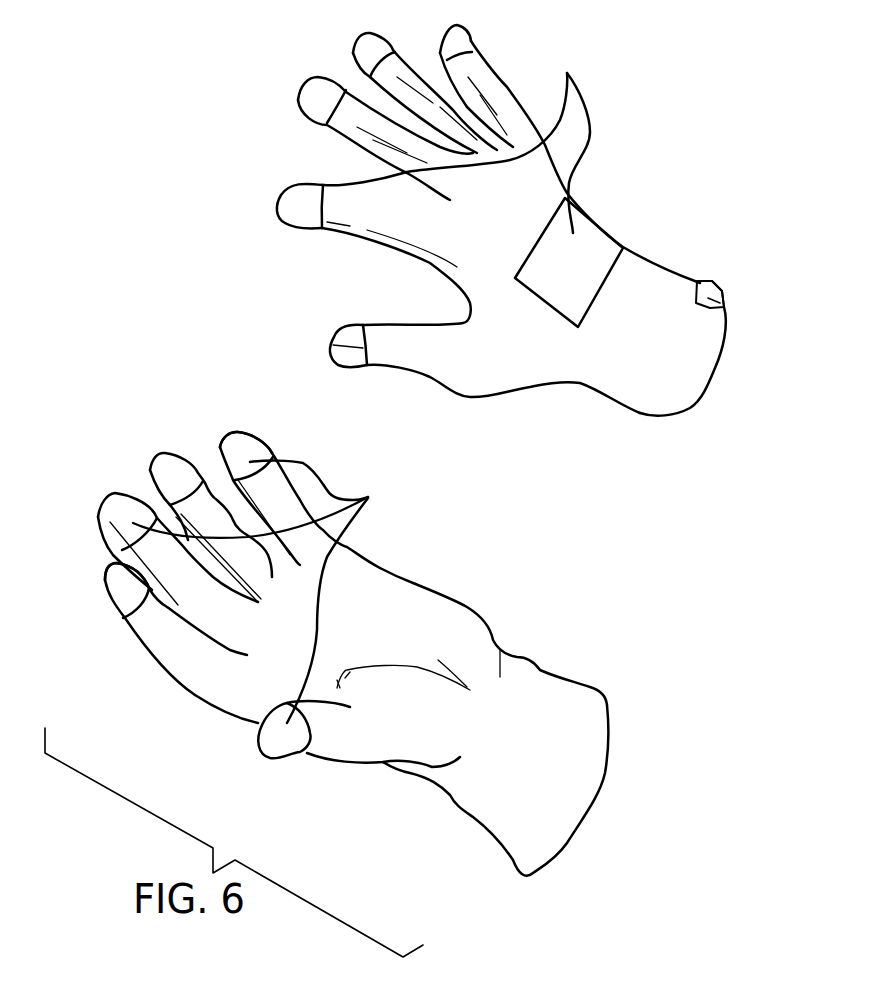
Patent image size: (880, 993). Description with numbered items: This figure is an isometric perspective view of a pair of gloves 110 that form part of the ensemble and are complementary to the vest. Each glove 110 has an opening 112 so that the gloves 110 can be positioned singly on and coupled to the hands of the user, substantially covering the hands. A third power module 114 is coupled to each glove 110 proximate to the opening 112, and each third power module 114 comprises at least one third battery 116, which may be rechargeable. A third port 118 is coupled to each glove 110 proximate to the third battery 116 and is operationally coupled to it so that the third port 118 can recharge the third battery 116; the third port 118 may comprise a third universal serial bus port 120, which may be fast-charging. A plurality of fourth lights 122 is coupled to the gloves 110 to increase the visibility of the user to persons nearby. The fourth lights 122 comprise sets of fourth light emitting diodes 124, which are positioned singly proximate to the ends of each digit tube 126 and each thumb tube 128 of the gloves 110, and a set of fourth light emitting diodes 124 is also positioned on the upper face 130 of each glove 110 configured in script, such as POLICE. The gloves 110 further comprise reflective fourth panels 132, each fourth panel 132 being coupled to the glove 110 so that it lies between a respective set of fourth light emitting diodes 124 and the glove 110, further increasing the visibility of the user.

The glove 110 is at (562, 641).
The opening 112 is at (597, 807).
The third power module 114 is at (720, 297).
The third battery 116 is at (724, 308).
The third port 118 is at (705, 280).
The third universal serial bus port 120 is at (703, 282).
The fourth light 122 is at (567, 73).
The set of fourth light emitting diodes 124 is at (368, 497).
The digit tube 126 is at (237, 447).
The thumb tube 128 is at (341, 331).
The upper face 130 is at (670, 366).
The fourth panel 132 is at (427, 377).